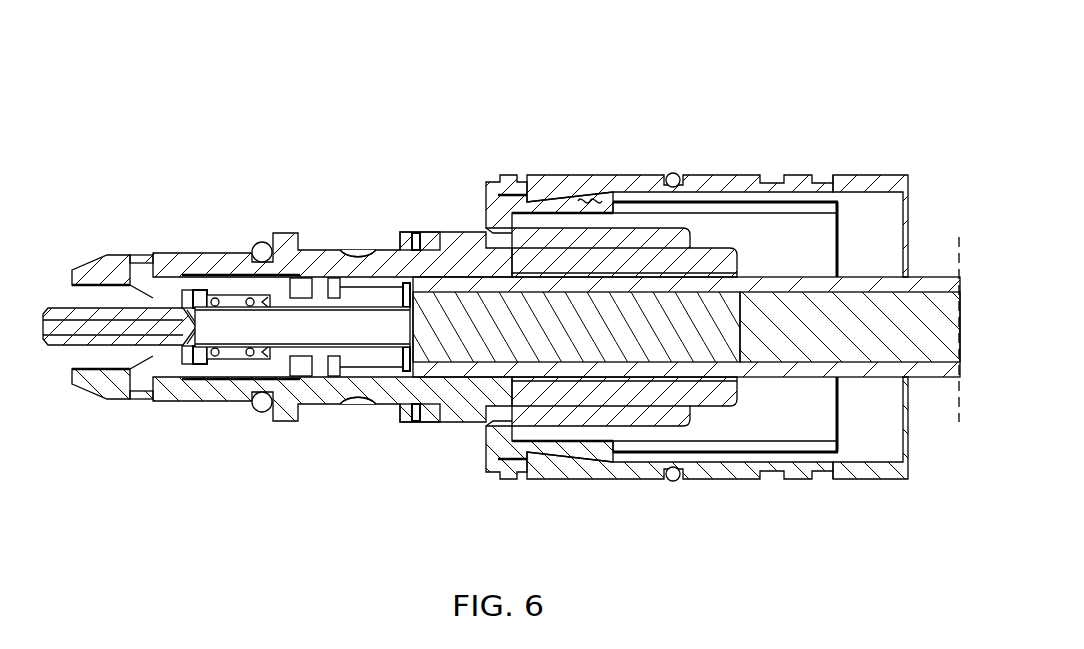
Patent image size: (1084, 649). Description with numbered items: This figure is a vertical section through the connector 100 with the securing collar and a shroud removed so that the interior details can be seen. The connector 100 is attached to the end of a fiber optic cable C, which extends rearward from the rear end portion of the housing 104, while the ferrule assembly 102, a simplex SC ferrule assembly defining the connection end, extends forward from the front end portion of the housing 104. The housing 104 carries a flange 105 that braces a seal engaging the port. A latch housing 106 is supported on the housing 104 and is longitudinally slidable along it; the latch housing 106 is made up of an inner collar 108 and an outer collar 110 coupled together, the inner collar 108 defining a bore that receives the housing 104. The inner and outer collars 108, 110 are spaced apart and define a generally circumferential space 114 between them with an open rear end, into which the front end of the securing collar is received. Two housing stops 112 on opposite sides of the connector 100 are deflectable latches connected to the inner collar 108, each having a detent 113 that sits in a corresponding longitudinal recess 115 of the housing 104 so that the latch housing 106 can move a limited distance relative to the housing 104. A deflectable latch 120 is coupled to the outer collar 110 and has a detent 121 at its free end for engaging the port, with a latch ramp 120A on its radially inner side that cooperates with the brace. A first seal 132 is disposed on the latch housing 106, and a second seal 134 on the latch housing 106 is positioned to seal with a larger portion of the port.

The connector 100 is at (678, 64).
The ferrule assembly 102 is at (90, 353).
The housing 104 is at (208, 242).
The flange 105 is at (283, 410).
The latch housing 106 is at (871, 164).
The inner collar 108 is at (595, 412).
The outer collar 110 is at (720, 177).
The housing stop 112 is at (434, 216).
The detent 113 is at (424, 400).
The circumferential space 114 is at (600, 194).
The longitudinal recess 115 is at (355, 248).
The deflectable latch 120 is at (593, 193).
The latch ramp 120A is at (557, 198).
The detent 121 is at (516, 172).
The first seal 132 is at (266, 244).
The second seal 134 is at (677, 482).
The fiber optic cable C is at (937, 307).